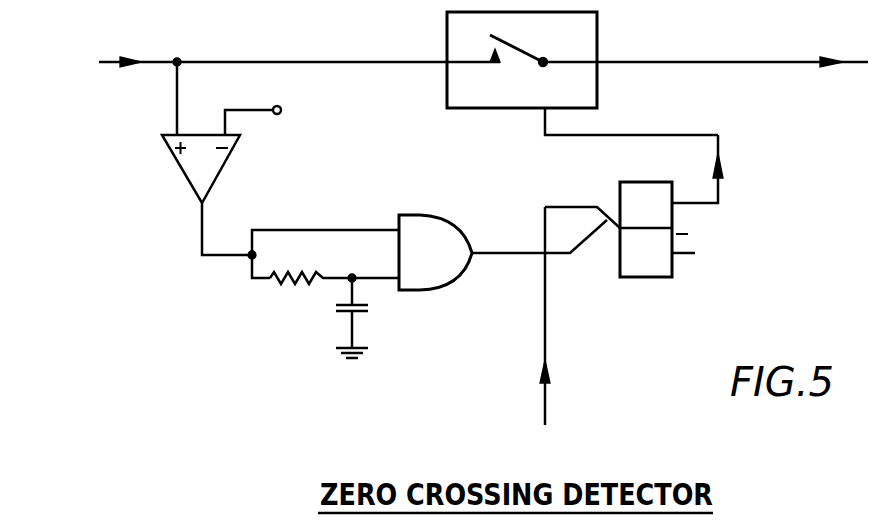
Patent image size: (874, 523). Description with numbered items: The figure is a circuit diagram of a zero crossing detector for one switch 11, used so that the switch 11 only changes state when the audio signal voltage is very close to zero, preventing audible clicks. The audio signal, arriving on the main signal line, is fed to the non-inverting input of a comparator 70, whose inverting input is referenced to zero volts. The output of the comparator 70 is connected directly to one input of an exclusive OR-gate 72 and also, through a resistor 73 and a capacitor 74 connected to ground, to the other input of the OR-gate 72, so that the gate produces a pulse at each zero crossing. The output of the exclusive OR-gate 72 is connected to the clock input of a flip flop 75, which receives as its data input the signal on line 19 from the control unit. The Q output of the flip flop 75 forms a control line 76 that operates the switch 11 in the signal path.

The switch 11 is at (576, 40).
The input line 19 is at (542, 400).
The comparator 70 is at (196, 167).
The exclusive OR-gate 72 is at (436, 268).
The resistor 73 is at (315, 279).
The capacitor 74 is at (354, 311).
The flip flop 75 is at (652, 270).
The control line 76 is at (640, 135).